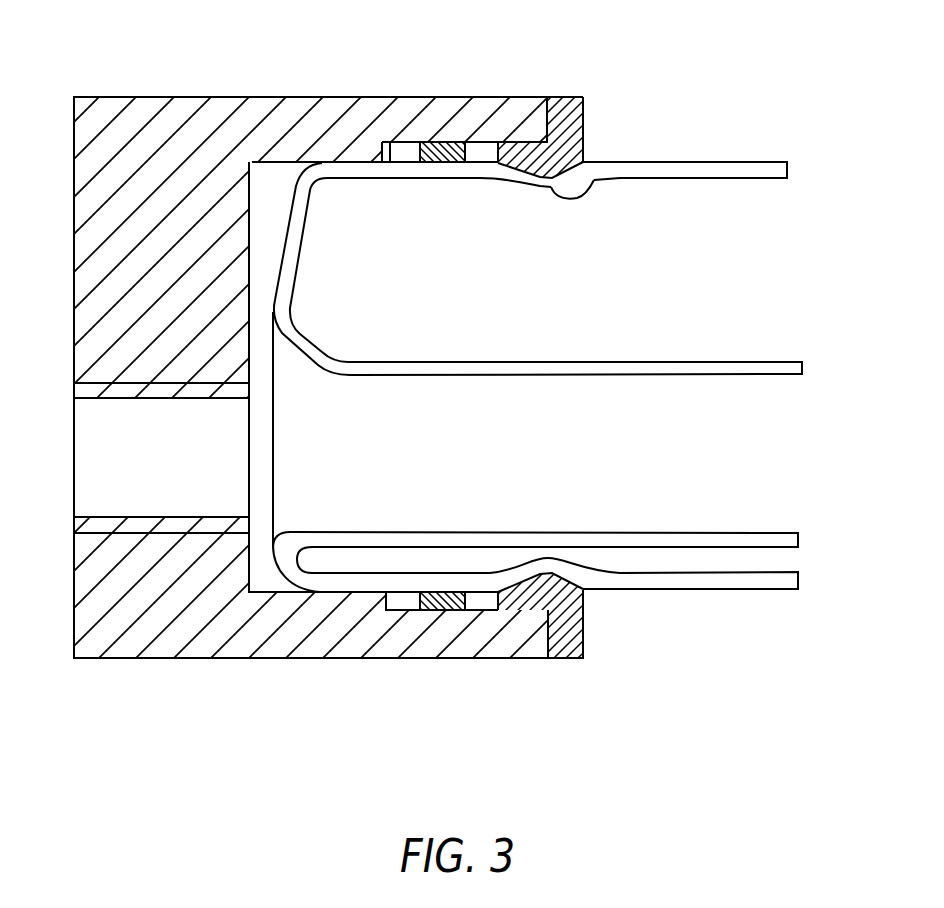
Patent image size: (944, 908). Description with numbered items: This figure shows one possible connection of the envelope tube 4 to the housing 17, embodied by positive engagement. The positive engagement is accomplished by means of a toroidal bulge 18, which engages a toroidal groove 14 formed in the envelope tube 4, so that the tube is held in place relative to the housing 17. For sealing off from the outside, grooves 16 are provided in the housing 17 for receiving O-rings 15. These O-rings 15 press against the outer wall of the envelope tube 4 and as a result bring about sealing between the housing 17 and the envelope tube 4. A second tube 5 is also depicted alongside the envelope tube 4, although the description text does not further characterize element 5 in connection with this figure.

The envelope tube 4 is at (728, 160).
The second pipe 5 is at (748, 532).
The toroidal groove 14 is at (585, 195).
The O-rings 15 is at (478, 147).
The grooves 16 is at (467, 606).
The housing 17 is at (222, 112).
The toroidal bulge 18 is at (583, 622).